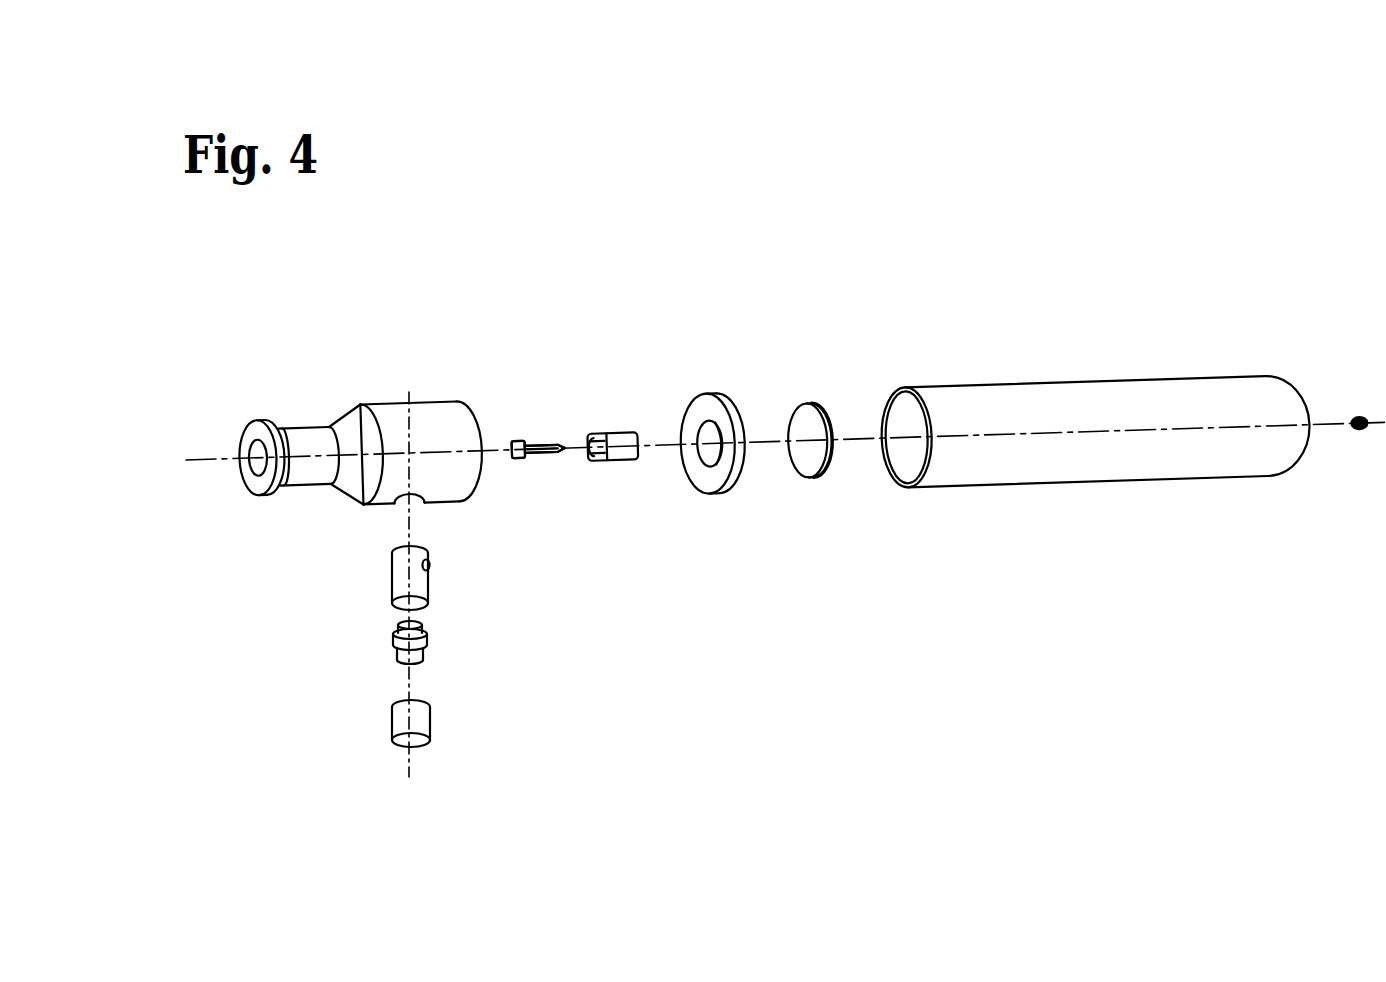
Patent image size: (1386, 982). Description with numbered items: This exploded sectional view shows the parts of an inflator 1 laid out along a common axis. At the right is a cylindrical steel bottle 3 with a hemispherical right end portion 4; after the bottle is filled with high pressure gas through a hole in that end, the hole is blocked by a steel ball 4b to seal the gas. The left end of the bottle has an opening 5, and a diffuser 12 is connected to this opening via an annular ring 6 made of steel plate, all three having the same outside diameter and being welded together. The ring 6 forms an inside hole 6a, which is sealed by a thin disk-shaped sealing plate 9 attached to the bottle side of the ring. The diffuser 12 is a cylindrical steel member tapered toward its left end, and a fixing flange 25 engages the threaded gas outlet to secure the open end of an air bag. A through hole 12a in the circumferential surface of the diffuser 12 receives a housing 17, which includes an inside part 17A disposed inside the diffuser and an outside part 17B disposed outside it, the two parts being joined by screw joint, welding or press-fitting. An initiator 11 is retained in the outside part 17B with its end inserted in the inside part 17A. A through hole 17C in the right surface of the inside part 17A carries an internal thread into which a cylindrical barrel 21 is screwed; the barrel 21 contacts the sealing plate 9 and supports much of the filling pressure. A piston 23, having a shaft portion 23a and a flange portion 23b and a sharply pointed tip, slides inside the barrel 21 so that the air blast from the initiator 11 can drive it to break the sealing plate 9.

The inflator 1 is at (1000, 146).
The cylindrical steel bottle 3 is at (1057, 378).
The hemispherical right end portion 4 is at (1305, 398).
The steel ball 4b is at (1360, 417).
The opening 5 is at (903, 388).
The annular ring 6 is at (713, 493).
The inside hole 6a is at (712, 465).
The sealing plate 9 is at (808, 468).
The initiator 11 is at (425, 625).
The diffuser 12 is at (398, 418).
The through hole 12a is at (421, 503).
The housing 17 is at (242, 560).
The inside part 17A is at (392, 566).
The outside part 17B is at (392, 720).
The through hole 17C is at (429, 564).
The barrel 21 is at (622, 434).
The piston 23 is at (598, 319).
The shaft portion 23a is at (550, 446).
The flange portion 23b is at (516, 443).
The fixing flange 25 is at (258, 436).